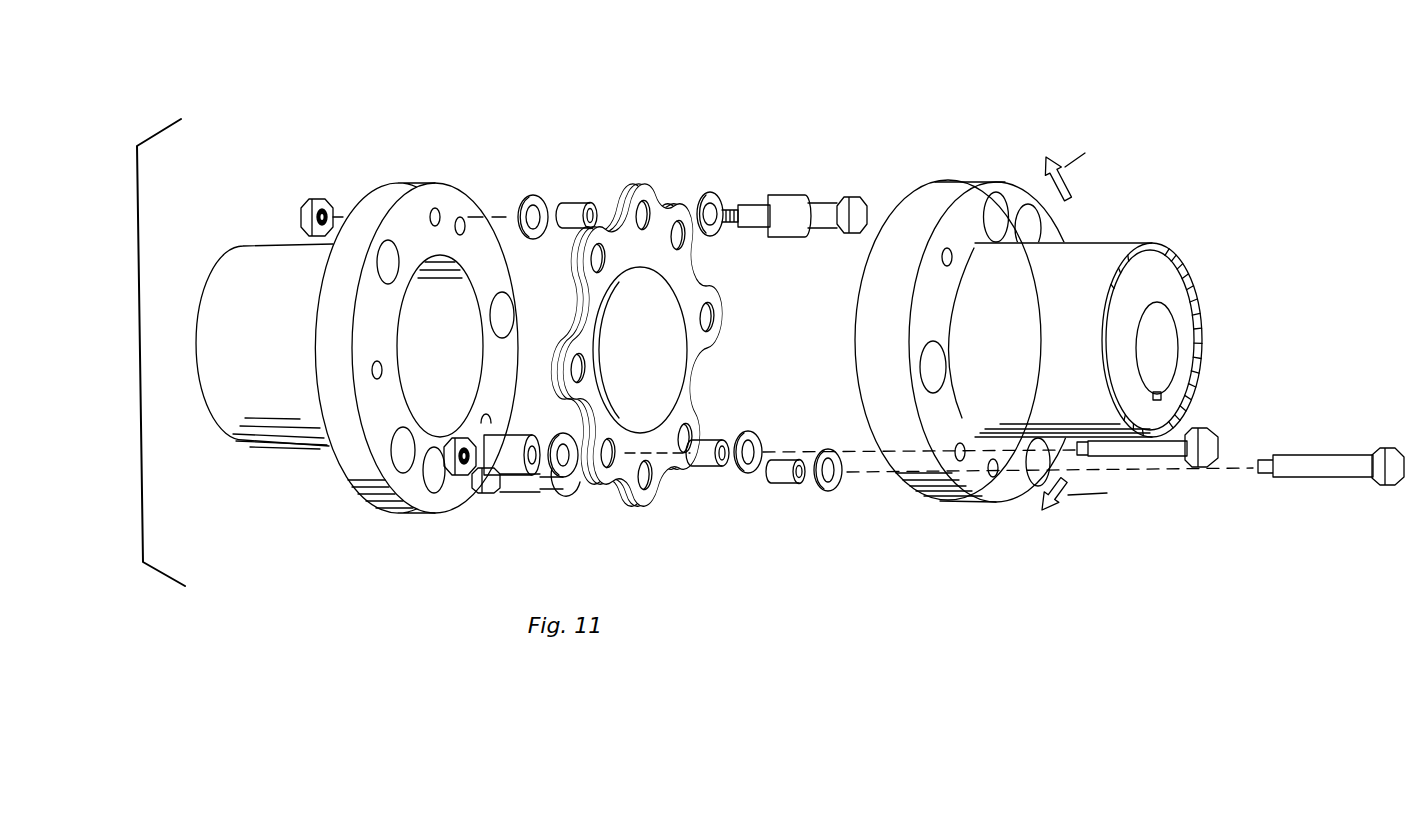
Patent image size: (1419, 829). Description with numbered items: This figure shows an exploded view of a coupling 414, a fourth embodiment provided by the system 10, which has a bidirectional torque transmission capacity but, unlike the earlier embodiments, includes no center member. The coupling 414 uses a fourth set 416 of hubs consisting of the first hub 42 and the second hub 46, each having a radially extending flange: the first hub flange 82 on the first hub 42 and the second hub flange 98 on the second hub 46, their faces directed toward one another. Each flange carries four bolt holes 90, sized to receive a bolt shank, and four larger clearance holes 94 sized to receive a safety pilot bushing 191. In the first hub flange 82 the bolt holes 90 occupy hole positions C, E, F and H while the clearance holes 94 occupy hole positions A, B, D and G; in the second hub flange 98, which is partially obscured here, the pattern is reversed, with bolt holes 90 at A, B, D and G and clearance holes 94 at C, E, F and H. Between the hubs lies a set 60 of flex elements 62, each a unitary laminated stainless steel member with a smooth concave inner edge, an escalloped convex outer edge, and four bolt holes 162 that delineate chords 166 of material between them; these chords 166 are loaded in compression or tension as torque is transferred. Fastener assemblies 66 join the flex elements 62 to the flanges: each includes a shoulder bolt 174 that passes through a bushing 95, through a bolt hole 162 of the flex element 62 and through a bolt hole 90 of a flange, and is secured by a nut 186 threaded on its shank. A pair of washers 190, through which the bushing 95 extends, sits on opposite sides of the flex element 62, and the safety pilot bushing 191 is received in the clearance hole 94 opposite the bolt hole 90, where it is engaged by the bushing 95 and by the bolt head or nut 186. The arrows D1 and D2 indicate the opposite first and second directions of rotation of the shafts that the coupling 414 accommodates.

The system 10 is at (1083, 110).
The first hub 42 is at (1055, 355).
The second hub 46 is at (290, 360).
The set of flex elements 60 is at (602, 496).
The flex element 62 is at (648, 194).
The fastener assembly 66 is at (770, 160).
The first hub flange 82 is at (914, 470).
The bolt hole 90 is at (462, 223).
The clearance hole 94 is at (396, 277).
The bushing 95 is at (570, 203).
The second hub flange 98 is at (388, 188).
The bolt hole 162 is at (720, 317).
The chord 166 is at (611, 201).
The shoulder bolt 174 is at (755, 210).
The nut 186 is at (313, 198).
The washer 190 is at (530, 195).
The safety pilot bushing 191 is at (797, 200).
The coupling 414 is at (930, 120).
The fourth set of hubs 416 is at (680, 93).
The hole position A is at (997, 207).
The hole position B is at (1030, 240).
The hole position C is at (506, 316).
The hole position E is at (996, 478).
The hole position F is at (955, 452).
The hole position G is at (918, 353).
The hole position H is at (942, 257).
The first direction D1 is at (1080, 168).
The second direction D2 is at (1091, 494).